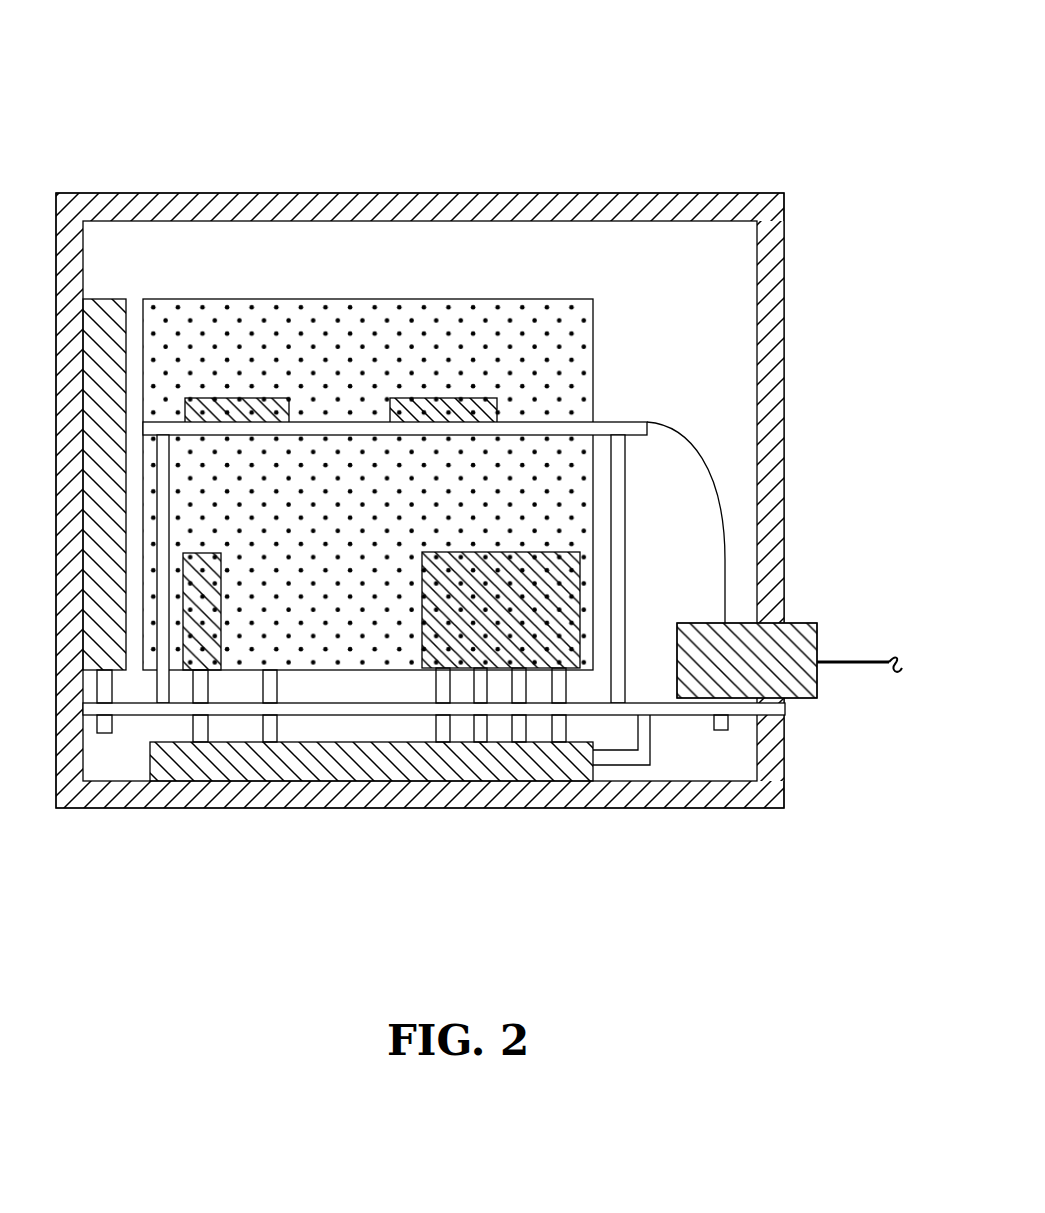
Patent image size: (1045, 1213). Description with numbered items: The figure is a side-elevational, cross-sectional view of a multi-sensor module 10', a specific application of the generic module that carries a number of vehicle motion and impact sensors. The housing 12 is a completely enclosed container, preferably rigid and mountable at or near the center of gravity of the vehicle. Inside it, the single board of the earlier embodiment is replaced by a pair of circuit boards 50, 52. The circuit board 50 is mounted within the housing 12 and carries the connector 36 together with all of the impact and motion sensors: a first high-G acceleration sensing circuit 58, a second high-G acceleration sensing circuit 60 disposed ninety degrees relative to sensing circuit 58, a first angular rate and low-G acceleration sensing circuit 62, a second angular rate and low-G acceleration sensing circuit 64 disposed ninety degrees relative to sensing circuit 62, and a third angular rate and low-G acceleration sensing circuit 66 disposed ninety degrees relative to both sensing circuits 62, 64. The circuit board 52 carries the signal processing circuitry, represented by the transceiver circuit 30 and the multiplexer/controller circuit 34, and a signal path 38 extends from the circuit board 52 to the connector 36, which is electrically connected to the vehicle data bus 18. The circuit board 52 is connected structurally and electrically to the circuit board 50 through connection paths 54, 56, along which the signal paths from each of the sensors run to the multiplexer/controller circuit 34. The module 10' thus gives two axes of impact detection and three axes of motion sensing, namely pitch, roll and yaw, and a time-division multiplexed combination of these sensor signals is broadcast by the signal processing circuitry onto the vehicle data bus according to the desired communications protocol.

The multi-sensor module 10' is at (699, 66).
The housing 12 is at (431, 193).
The vehicle data bus 18 is at (862, 665).
The transceiver circuit 30 is at (437, 398).
The multiplexer/controller circuit 34 is at (235, 398).
The connector 36 is at (800, 623).
The signal path 38 is at (690, 433).
The circuit board 50 is at (699, 715).
The circuit board 52 is at (622, 422).
The connection path 54 is at (169, 484).
The connection path 56 is at (626, 509).
The first high-G acceleration sensing circuit 58 is at (500, 552).
The second high-G acceleration sensing circuit 60 is at (221, 603).
The first angular rate and low-G acceleration sensing circuit 62 is at (103, 299).
The second angular rate and low-G acceleration sensing circuit 64 is at (358, 299).
The third angular rate and low-G acceleration sensing circuit 66 is at (150, 757).